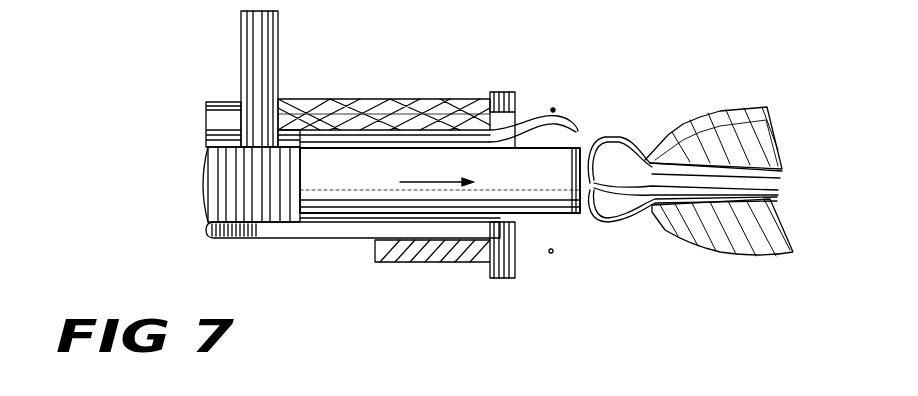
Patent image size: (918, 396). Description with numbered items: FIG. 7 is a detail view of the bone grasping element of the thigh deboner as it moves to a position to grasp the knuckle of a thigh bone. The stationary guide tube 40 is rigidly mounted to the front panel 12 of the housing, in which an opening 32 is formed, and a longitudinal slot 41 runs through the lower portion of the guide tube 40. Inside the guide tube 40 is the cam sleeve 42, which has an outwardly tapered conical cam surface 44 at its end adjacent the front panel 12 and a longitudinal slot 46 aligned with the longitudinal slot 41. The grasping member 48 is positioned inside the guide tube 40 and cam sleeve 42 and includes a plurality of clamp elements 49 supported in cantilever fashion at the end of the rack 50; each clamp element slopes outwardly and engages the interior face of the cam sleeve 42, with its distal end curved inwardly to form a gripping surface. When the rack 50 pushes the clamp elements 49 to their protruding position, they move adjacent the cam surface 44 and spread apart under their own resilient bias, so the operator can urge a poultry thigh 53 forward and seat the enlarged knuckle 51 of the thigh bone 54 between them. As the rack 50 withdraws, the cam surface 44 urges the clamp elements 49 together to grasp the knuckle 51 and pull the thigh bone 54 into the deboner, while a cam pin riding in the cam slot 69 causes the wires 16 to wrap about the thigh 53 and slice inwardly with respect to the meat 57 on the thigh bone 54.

The front panel 12 is at (515, 93).
The wires 16 is at (555, 108).
The opening 32 is at (506, 250).
The stationary guide tube 40 is at (318, 108).
The longitudinal slot 41 is at (272, 238).
The cam sleeve 42 is at (360, 124).
The cam surface 44 is at (500, 137).
The longitudinal slot 46 is at (232, 230).
The grasping member 48 is at (357, 211).
The clamp elements 49 is at (578, 142).
The rack 50 is at (212, 190).
The knuckle 51 is at (615, 145).
The poultry thigh 53 is at (727, 108).
The thigh bone 54 is at (775, 196).
The meat 57 is at (697, 238).
The cam slot 69 is at (268, 60).